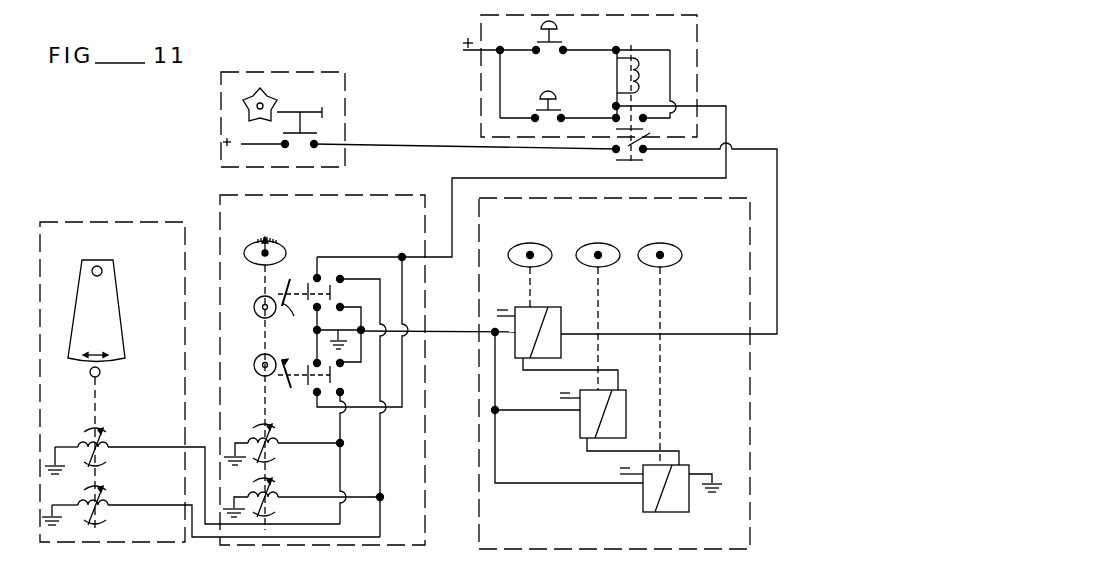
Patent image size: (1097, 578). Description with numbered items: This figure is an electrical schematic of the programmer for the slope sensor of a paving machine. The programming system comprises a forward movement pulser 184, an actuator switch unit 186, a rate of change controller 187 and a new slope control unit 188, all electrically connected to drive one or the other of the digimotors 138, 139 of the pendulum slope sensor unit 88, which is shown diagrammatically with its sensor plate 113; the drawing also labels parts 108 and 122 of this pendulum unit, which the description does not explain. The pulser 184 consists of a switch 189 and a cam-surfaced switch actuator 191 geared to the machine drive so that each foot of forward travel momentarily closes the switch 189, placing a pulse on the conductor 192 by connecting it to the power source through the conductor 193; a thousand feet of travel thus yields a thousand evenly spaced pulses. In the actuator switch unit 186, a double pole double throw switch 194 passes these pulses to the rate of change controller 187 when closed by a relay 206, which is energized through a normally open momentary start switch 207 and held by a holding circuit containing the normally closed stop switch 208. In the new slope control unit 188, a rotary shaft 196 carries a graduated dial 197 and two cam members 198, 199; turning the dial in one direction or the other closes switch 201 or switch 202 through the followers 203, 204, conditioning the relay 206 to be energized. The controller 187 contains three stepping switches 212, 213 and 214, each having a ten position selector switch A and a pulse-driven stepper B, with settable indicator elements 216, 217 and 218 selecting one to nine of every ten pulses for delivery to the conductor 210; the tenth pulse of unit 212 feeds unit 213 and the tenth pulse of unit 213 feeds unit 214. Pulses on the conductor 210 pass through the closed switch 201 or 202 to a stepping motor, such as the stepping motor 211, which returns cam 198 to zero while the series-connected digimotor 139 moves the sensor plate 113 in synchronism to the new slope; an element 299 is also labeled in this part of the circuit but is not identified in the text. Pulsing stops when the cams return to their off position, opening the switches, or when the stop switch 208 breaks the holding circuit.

The pendulum slope sensor unit 88 is at (100, 222).
The pendulum suspension pin 108 is at (101, 267).
The sensor plate 113 is at (120, 330).
The pendulum pivot 122 is at (101, 373).
The digimotor 138 is at (110, 502).
The stepping digimotor 139 is at (110, 443).
The forward movement pulser 184 is at (266, 72).
The actuator switch unit 186 is at (699, 45).
The rate of change controller 187 is at (752, 259).
The new slope control unit 188 is at (371, 196).
The switch 189 is at (317, 130).
The switch actuator 191 is at (272, 98).
The conductor 192 is at (465, 127).
The conductor 193 is at (268, 145).
The double pole double throw switch 194 is at (645, 142).
The rotary shaft 196 is at (262, 330).
The dial 197 is at (250, 263).
The cam member 198 is at (258, 376).
The cam member 199 is at (279, 292).
The switch 201 is at (321, 285).
The switch 202 is at (311, 386).
The follower 203 is at (292, 316).
The follower 204 is at (291, 358).
The relay 206 is at (620, 68).
The start switch 207 is at (538, 40).
The stop switch 208 is at (537, 114).
The conductor 210 is at (450, 335).
The stepping motor 211 is at (278, 441).
The stepping switch 212 is at (546, 310).
The stepping switch 213 is at (604, 388).
The stepping switch 214 is at (668, 462).
The settable indicator element 216 is at (520, 267).
The settable indicator element 217 is at (606, 267).
The settable indicator element 218 is at (672, 267).
The potentiometer 299 is at (278, 494).